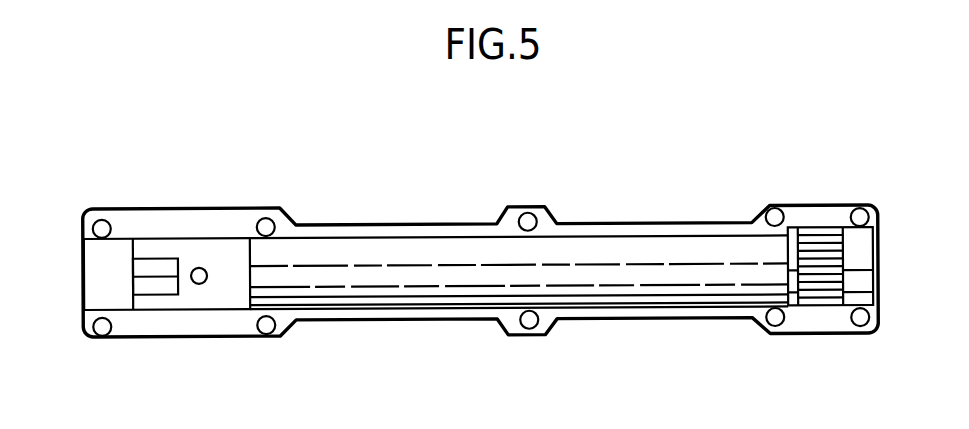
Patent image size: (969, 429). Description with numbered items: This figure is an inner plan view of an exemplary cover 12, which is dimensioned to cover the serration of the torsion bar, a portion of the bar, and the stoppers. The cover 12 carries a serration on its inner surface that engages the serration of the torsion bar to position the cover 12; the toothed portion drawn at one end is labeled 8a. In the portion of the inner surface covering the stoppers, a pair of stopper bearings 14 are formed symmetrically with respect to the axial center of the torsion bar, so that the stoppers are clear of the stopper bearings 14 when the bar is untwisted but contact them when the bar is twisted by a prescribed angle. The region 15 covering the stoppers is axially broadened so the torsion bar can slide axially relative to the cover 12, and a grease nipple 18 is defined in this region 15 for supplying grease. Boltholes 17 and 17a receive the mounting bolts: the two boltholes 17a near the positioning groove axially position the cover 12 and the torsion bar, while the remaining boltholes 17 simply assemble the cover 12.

The cover 12 is at (372, 225).
The stopper bearing 14 is at (152, 287).
The region 15 is at (232, 297).
The bolthole 17 is at (524, 213).
The bolthole 17a is at (858, 208).
The grease nipple 18 is at (200, 265).
The terminal block 8a is at (818, 227).